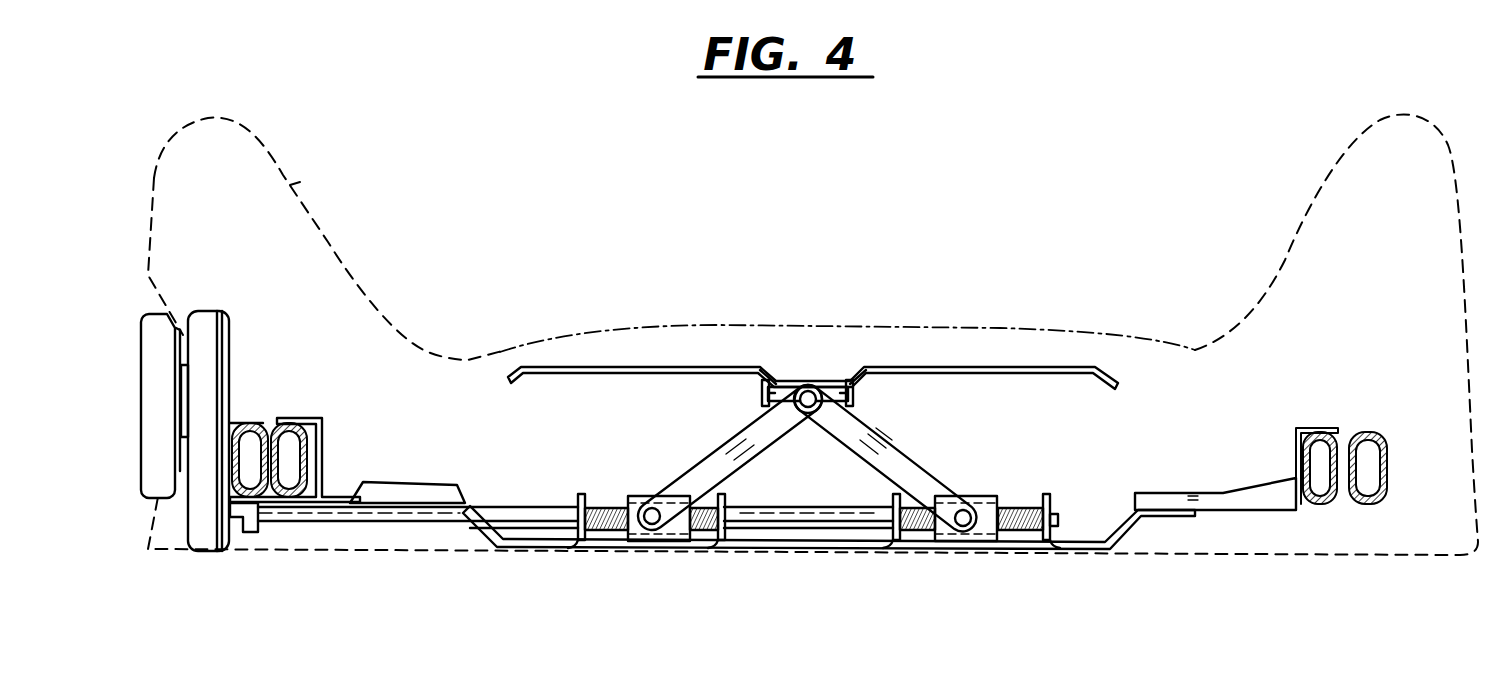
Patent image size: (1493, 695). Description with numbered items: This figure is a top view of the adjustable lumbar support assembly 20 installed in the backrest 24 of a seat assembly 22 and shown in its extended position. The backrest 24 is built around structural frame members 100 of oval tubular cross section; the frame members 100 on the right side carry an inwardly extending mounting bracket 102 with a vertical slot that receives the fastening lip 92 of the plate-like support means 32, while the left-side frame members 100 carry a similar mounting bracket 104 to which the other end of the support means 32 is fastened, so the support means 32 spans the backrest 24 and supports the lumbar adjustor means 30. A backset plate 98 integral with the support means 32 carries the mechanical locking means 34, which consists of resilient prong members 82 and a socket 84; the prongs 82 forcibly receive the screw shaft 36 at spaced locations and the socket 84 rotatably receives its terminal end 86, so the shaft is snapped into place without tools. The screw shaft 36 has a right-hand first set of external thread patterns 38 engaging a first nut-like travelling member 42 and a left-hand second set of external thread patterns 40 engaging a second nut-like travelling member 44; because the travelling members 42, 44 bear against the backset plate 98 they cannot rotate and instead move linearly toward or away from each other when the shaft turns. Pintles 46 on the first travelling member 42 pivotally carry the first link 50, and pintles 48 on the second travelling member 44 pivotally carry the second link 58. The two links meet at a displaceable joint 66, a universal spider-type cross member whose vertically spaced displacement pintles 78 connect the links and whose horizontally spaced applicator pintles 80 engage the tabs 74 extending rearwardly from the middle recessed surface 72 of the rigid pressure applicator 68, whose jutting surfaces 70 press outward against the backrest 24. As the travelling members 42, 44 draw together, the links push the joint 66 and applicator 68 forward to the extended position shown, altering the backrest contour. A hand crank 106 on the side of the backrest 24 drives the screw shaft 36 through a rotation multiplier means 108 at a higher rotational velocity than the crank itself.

The adjustable lumbar support assembly 20 is at (1178, 410).
The seat assembly 22 is at (247, 120).
The backrest portion 24 is at (300, 182).
The lumbar adjustor means 30 is at (517, 364).
The support means 32 is at (1110, 552).
The mechanical locking means 34 is at (587, 494).
The screw shaft 36 is at (413, 522).
The first set of external thread patterns 38 is at (607, 534).
The second set of external thread patterns 40 is at (1035, 534).
The first nut-like travelling member 42 is at (625, 542).
The second nut-like travelling member 44 is at (1000, 542).
The pintles 46 is at (656, 526).
The pintles 48 is at (961, 528).
The first link 50 is at (722, 468).
The second link 58 is at (918, 470).
The displaceable joint 66 is at (838, 386).
The pressure applicator 68 is at (888, 368).
The jutting surfaces 70 is at (623, 364).
The middle recessed surface 72 is at (753, 368).
The tabs 74 is at (768, 394).
The displacement pintles 78 is at (768, 384).
The applicator pintles 80 is at (808, 409).
The resilient prong members 82 is at (577, 497).
The socket 84 is at (1051, 496).
The terminal end 86 is at (1059, 520).
The fastening lip 92 is at (1195, 495).
The backset plate 98 is at (845, 548).
The structural frame members 100 is at (250, 420).
The mounting bracket 102 is at (1240, 510).
The mounting bracket 104 is at (328, 495).
The hand crank 106 is at (150, 325).
The rotation multiplier means 108 is at (213, 310).